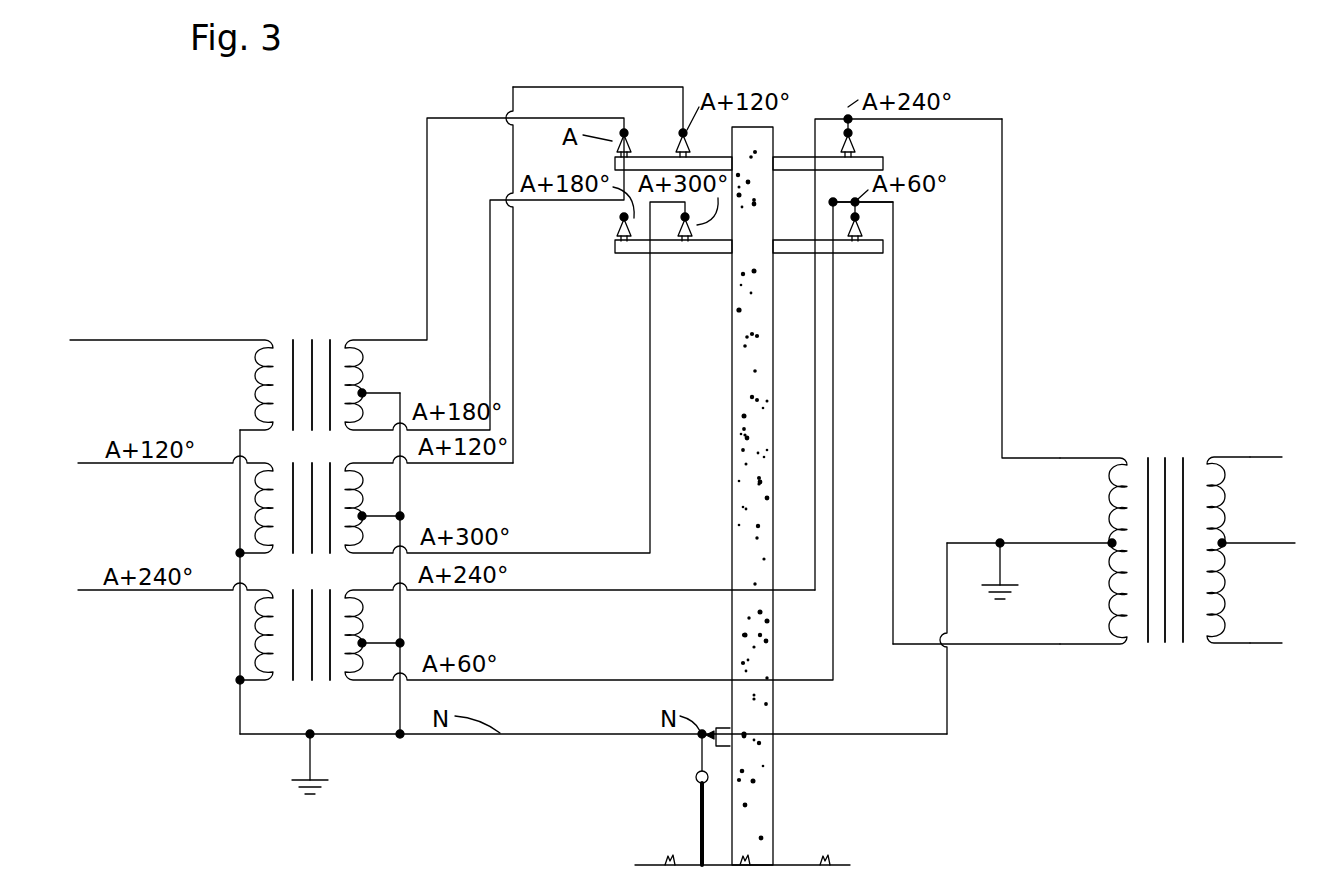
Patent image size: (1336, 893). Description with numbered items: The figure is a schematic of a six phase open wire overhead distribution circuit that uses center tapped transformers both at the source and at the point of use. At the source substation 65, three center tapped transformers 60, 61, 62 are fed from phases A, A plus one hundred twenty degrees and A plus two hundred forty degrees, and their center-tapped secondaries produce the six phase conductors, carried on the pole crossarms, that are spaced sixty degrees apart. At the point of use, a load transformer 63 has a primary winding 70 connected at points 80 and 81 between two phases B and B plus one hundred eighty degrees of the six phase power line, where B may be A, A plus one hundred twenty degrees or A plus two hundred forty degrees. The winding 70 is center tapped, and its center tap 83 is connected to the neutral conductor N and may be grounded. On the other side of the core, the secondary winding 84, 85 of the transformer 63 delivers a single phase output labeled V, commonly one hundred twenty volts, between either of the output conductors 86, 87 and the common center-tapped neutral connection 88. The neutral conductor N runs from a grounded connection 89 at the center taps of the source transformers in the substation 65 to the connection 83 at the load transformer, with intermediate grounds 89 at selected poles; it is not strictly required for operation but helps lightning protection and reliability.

The center tapped transformer 60 is at (262, 386).
The center tapped transformer 61 is at (258, 512).
The center tapped transformer 62 is at (258, 640).
The load transformer 63 is at (1149, 652).
The source substation 65 is at (282, 742).
The primary winding 70 is at (1117, 465).
The primary connection point 80 is at (1017, 642).
The primary connection point 81 is at (1020, 465).
The center tap 83 is at (1108, 542).
The secondary winding of load transformer 84 is at (1205, 455).
The secondary winding 85 is at (1285, 642).
The output conductor 86 is at (1285, 457).
The output conductor 87 is at (1224, 542).
The center-tapped neutral connection 88 is at (405, 739).
The grounded connection 89 is at (695, 777).